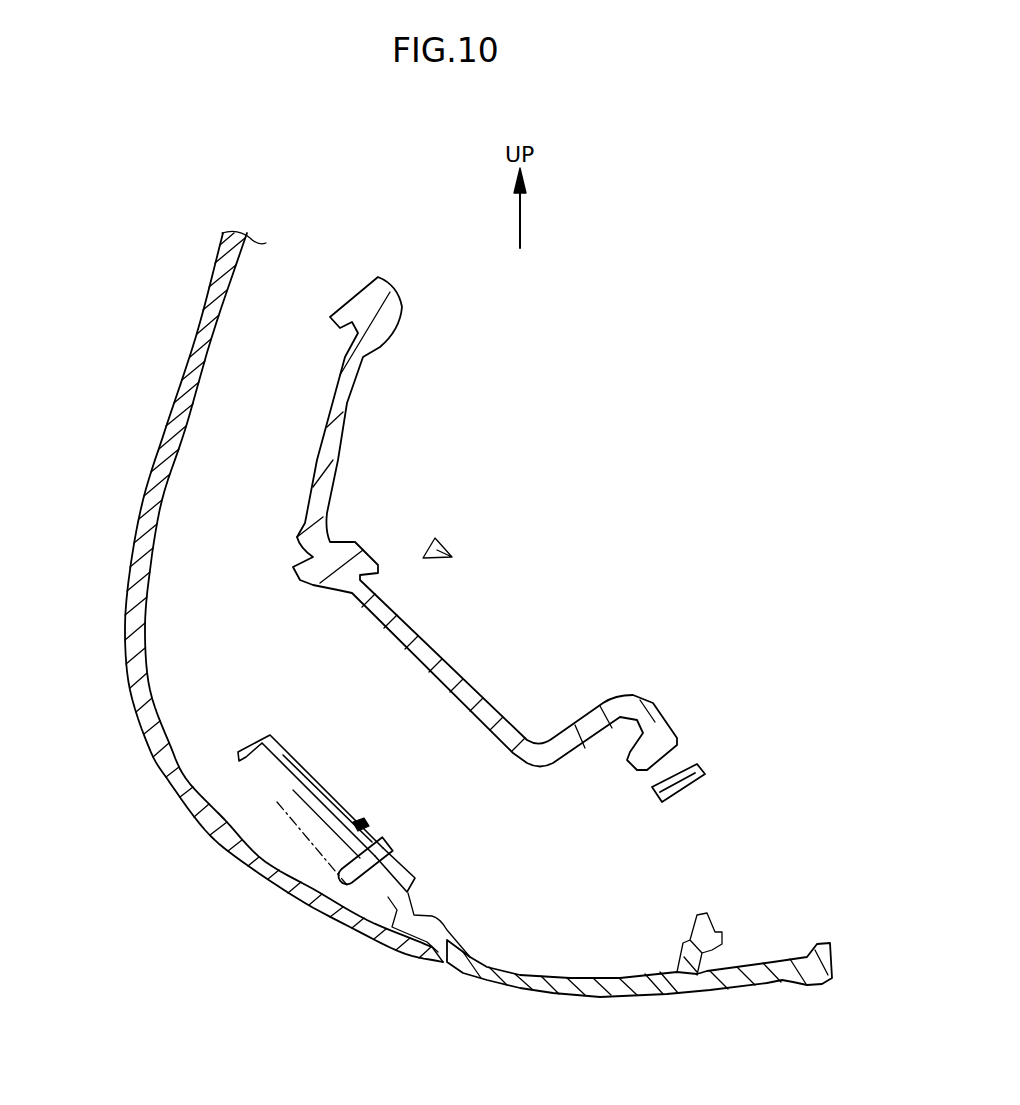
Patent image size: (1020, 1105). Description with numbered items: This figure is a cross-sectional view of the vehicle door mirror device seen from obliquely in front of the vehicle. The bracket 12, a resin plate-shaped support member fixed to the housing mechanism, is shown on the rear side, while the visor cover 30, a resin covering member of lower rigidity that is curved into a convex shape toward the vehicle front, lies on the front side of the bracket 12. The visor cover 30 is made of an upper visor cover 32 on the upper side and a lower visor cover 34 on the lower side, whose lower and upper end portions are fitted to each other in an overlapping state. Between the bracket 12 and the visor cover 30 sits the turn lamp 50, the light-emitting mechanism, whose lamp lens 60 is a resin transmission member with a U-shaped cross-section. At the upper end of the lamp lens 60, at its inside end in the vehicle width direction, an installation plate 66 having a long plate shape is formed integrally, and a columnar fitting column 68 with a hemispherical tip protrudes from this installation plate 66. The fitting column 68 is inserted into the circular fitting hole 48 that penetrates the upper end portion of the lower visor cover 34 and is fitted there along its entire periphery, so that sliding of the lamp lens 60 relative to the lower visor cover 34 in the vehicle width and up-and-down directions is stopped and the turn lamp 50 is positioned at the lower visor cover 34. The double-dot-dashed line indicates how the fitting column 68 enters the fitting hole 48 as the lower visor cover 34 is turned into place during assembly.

The bracket 12 is at (478, 684).
The visor cover 30 is at (432, 659).
The upper visor cover 32 is at (161, 431).
The lower visor cover 34 is at (664, 1012).
The fitting hole 48 is at (364, 855).
The turn lamp 50 is at (426, 886).
The lamp lens 60 is at (322, 809).
The installation plate 66 is at (362, 822).
The fitting column 68 is at (330, 912).